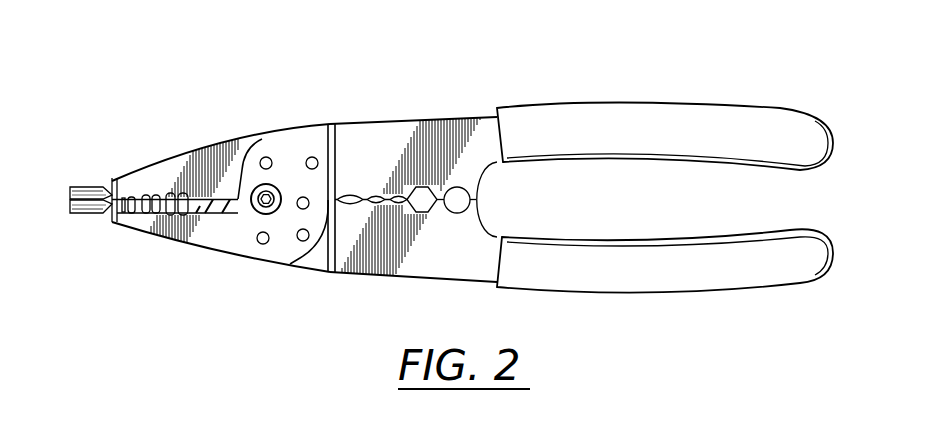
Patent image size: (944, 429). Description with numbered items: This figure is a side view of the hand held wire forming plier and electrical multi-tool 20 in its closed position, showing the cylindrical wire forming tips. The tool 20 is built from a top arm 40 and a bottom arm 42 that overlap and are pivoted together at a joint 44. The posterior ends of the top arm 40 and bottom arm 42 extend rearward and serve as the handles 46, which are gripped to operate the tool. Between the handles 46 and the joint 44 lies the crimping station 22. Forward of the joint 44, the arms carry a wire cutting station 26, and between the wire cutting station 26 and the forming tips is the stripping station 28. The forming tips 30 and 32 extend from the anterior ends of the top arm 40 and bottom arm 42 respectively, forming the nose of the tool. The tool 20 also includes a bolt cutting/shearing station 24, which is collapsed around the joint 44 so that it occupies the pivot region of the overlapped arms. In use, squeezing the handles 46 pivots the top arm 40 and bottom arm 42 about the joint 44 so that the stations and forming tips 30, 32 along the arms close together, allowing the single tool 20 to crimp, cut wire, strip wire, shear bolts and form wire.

The hand held wire forming plier and electrical multi-tool 20 is at (202, 128).
The crimping station 22 is at (458, 213).
The bolt cutting/shearing station 24 is at (263, 244).
The wire cutting station 26 is at (210, 214).
The stripping station 28 is at (140, 217).
The forming tip 30 is at (93, 187).
The forming tip 32 is at (93, 213).
The top arm 40 is at (402, 117).
The bottom arm 42 is at (363, 277).
The joint 44 is at (277, 184).
The handles 46 is at (604, 101).